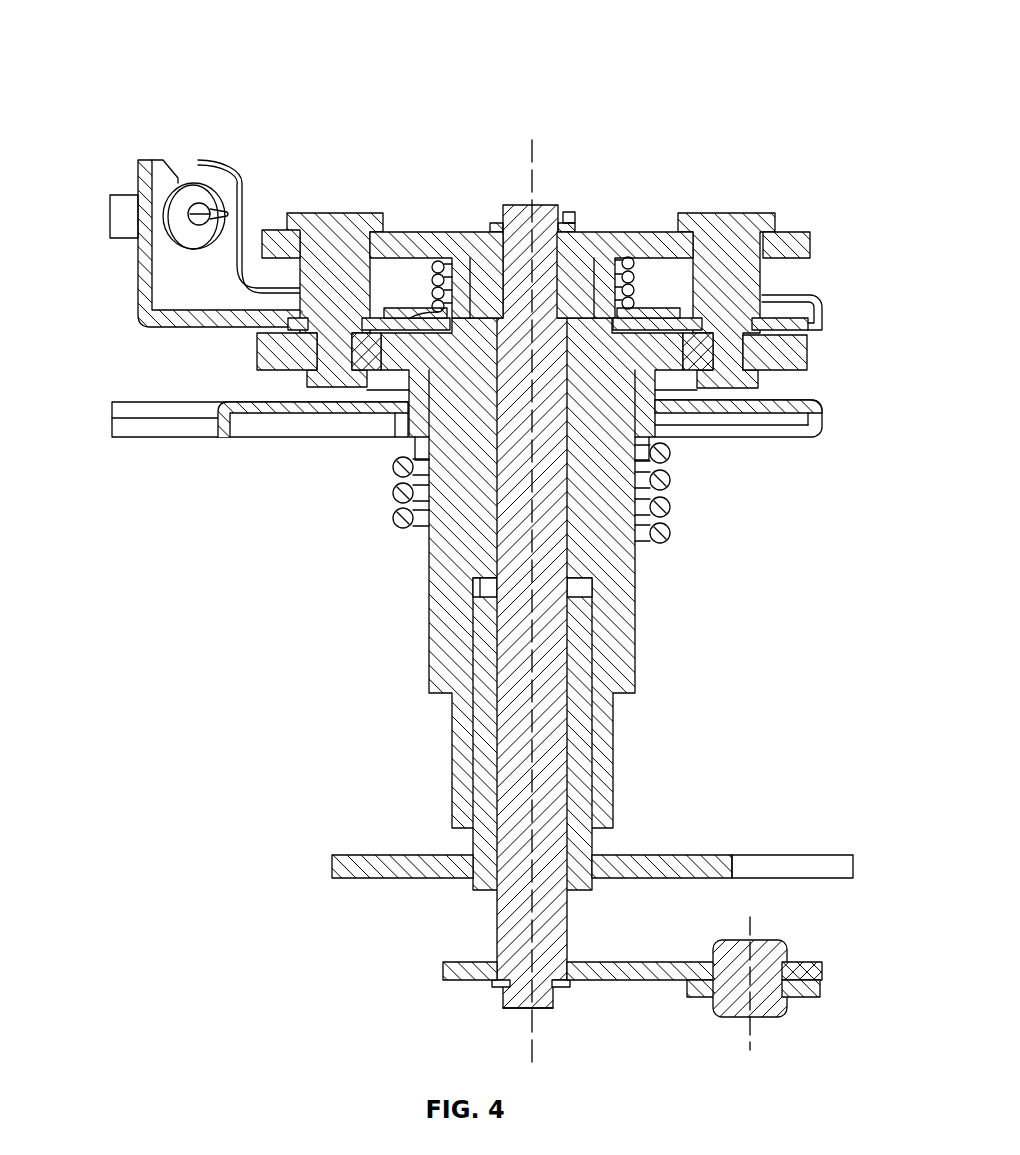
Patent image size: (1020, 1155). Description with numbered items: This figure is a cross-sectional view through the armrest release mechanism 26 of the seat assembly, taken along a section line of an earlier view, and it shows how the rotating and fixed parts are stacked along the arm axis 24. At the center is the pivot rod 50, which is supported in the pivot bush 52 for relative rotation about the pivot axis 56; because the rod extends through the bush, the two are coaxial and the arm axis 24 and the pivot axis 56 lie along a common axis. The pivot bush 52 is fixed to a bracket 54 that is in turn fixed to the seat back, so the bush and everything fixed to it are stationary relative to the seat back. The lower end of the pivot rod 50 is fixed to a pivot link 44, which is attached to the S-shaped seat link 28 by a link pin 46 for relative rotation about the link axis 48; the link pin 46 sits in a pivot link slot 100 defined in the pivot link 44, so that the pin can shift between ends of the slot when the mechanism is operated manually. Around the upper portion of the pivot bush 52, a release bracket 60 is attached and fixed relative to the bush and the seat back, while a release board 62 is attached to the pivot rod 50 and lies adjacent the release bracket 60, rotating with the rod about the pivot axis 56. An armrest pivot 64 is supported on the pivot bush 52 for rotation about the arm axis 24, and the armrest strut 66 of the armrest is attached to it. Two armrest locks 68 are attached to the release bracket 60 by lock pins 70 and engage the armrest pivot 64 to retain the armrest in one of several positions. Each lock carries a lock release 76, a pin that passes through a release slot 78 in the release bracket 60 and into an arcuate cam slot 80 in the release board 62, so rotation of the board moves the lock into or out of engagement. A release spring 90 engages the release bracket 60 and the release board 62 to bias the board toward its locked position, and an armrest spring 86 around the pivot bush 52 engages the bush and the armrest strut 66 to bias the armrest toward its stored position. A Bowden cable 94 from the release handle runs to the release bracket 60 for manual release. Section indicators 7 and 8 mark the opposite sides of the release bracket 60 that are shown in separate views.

The armrest release mechanism 26 is at (177, 33).
The arm axis 24 is at (528, 180).
The Bowden cable 94 is at (126, 195).
The lock release 76 is at (338, 213).
The cam slot 80 is at (373, 245).
The release board 62 is at (613, 262).
The release spring 90 is at (629, 262).
The release slot 78 is at (768, 320).
The release bracket 60 is at (820, 306).
The armrest lock 68 is at (303, 372).
The armrest strut 66 is at (152, 428).
The lock pin 70 is at (665, 387).
The armrest pivot 64 is at (650, 423).
The armrest spring 86 is at (673, 526).
The pivot bush 52 is at (452, 760).
The pivot rod 50 is at (495, 930).
The bracket 54 is at (793, 855).
The pivot link 44 is at (642, 980).
The link pin 46 is at (755, 940).
The pivot link slot 100 is at (790, 970).
The seat link 28 is at (795, 1000).
The link axis 48 is at (745, 1025).
The pivot axis 56 is at (528, 1045).
The section line 7 is at (128, 120).
The section line 8 is at (128, 387).